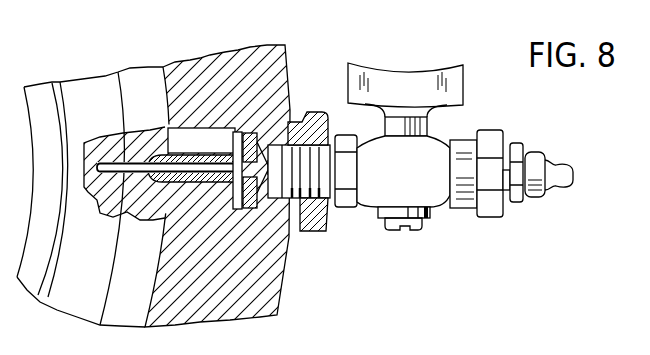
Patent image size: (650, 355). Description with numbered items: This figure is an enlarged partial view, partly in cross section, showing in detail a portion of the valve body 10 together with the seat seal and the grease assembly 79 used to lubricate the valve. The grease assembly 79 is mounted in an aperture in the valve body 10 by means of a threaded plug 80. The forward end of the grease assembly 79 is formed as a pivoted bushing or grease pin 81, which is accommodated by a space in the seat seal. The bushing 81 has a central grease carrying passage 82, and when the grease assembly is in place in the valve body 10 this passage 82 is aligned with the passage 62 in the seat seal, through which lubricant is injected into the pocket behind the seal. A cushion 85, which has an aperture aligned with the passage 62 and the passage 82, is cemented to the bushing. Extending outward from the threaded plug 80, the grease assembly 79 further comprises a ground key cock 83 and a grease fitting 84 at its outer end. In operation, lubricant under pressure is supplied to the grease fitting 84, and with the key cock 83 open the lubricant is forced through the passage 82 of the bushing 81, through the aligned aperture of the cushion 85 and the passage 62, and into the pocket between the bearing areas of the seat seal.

The valve body 10 is at (289, 58).
The passage 62 is at (86, 197).
The grease assembly 79 is at (389, 61).
The threaded plug 80 is at (318, 224).
The grease pin 81 is at (181, 184).
The grease carrying passage 82 is at (233, 203).
The ground key cock 83 is at (432, 193).
The grease fitting 84 is at (550, 161).
The cushion 85 is at (247, 208).